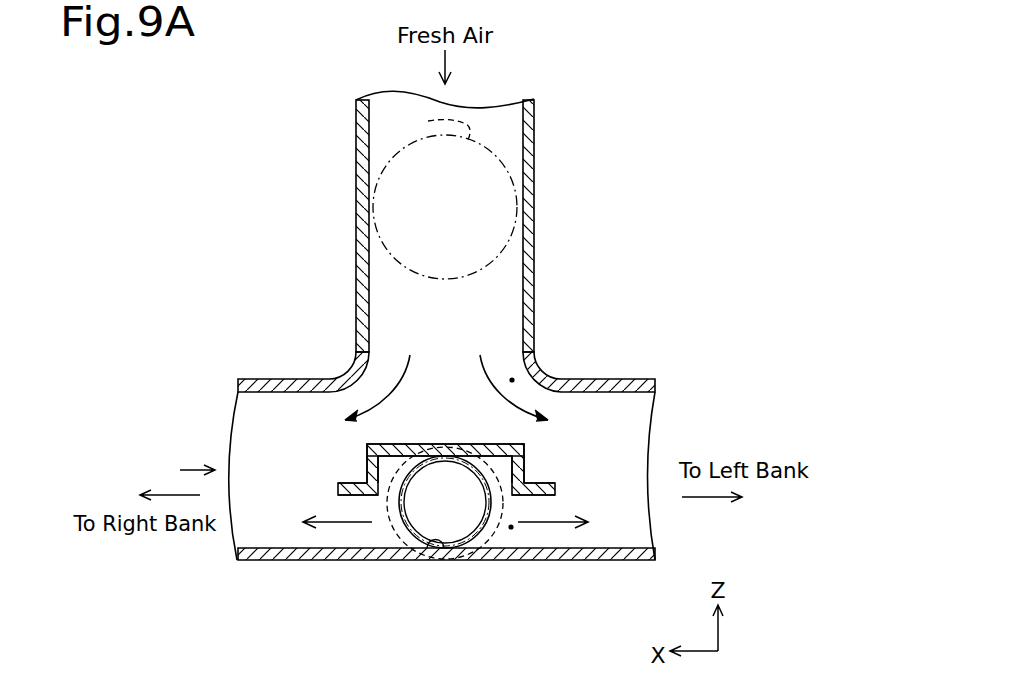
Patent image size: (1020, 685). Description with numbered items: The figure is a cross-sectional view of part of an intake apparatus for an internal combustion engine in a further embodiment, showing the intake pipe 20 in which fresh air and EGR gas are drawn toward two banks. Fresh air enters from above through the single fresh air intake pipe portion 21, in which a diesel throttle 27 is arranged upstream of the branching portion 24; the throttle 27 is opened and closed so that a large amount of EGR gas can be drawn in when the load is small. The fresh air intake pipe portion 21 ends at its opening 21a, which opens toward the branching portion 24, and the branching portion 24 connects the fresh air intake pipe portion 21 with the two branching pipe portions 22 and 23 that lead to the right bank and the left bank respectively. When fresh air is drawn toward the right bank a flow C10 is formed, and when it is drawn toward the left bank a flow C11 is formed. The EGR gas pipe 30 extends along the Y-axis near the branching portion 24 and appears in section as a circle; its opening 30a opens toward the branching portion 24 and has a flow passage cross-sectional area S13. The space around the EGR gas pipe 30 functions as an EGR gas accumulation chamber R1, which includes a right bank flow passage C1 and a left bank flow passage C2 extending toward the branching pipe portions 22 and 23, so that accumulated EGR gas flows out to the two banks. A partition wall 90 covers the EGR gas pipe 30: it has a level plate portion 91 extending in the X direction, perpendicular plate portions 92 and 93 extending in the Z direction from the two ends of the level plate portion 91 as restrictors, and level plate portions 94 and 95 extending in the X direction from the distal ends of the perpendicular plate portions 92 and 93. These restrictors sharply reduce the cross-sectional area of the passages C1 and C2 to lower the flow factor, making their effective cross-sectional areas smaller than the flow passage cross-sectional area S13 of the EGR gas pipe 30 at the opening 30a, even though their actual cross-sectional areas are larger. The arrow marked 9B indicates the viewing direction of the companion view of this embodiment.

The intake pipe 20 is at (537, 131).
The fresh air intake pipe portion 21 is at (537, 207).
The opening of the fresh air intake pipe portion 21a is at (512, 380).
The branching pipe portion 22 is at (268, 379).
The branching pipe portion 23 is at (620, 379).
The branching portion 24 is at (352, 371).
The diesel throttle 27 is at (430, 123).
The EGR gas pipe 30 is at (494, 449).
The opening of the EGR gas pipe 30a is at (433, 549).
The partition wall 90 is at (443, 444).
The level plate portion 91 is at (405, 445).
The perpendicular plate portion 92 is at (367, 452).
The perpendicular plate portion 93 is at (524, 452).
The level plate portion 94 is at (342, 488).
The level plate portion 95 is at (542, 488).
The right bank flow passage C1 is at (320, 518).
The left bank flow passage C2 is at (565, 518).
The flow C10 is at (410, 355).
The flow C11 is at (480, 355).
The EGR gas accumulation chamber R1 is at (511, 527).
The flow passage cross-sectional area S13 is at (388, 542).
The view direction of Fig. 9B is at (182, 471).